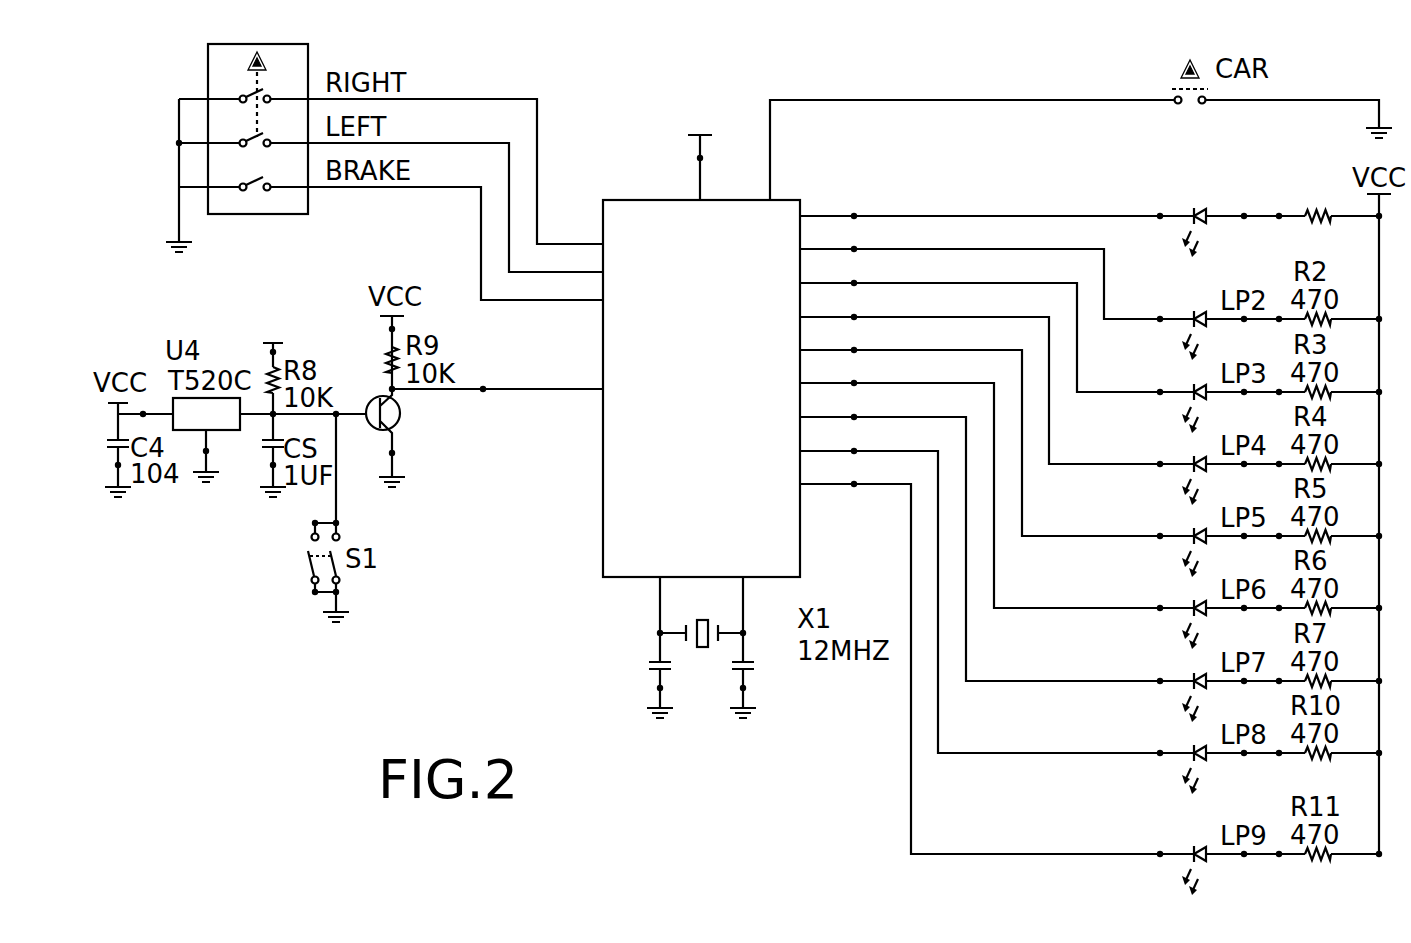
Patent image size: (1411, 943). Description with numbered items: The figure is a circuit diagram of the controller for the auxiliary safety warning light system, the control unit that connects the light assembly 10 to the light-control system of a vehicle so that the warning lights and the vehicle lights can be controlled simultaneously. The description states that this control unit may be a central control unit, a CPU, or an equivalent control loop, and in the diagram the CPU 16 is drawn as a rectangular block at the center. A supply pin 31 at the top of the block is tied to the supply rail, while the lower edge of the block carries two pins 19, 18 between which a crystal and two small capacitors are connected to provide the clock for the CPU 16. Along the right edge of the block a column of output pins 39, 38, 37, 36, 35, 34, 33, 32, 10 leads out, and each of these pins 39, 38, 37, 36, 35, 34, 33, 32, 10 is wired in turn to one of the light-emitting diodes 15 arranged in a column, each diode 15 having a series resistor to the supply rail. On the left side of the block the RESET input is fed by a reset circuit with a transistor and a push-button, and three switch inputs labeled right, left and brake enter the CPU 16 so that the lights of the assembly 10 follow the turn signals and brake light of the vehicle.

The light emitting diode lamp 15 is at (1194, 212).
The microprocessor CPU 16 is at (603, 490).
The CPU VCC pin 31 is at (698, 151).
The CPU output pin 39 is at (980, 203).
The CPU output pin 38 is at (980, 269).
The CPU output pin 37 is at (980, 323).
The CPU output pin 36 is at (980, 376).
The CPU output pin 35 is at (980, 428).
The CPU output pin 34 is at (980, 481).
The CPU output pin 33 is at (980, 534).
The CPU output pin 32 is at (980, 587).
The light assembly 10 is at (980, 654).
The CPU crystal pin X1 19 is at (673, 647).
The CPU crystal pin X2 18 is at (762, 647).